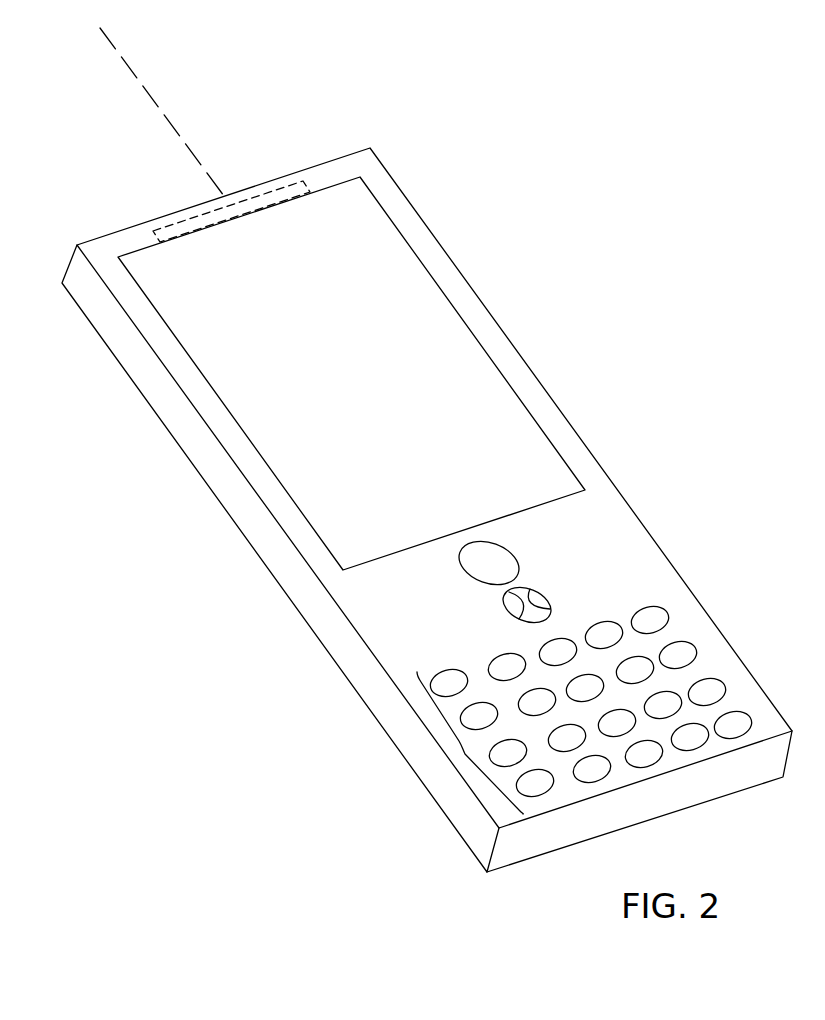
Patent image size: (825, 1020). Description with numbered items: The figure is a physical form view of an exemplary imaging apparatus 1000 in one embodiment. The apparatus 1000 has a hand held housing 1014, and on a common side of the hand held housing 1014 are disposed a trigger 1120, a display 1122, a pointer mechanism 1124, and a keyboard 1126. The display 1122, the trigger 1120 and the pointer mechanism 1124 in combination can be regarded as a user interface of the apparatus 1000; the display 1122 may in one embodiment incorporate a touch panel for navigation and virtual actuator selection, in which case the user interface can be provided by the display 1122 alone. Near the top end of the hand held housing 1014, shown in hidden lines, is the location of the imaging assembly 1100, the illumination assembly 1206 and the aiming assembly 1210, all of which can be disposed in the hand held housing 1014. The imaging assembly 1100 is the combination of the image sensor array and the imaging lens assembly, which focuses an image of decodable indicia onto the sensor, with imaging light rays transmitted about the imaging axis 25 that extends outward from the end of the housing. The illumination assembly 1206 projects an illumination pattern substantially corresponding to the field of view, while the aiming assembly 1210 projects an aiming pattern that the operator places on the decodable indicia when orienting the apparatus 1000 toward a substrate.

The apparatus 1000 is at (512, 154).
The imaging axis 25 is at (160, 108).
The imaging assembly 1100 is at (372, 142).
The illumination assembly 1206 is at (372, 142).
The aiming assembly 1210 is at (289, 180).
The display 1122 is at (513, 384).
The trigger 1120 is at (518, 558).
The pointer mechanism 1124 is at (551, 600).
The hand held housing 1014 is at (688, 630).
The keyboard 1126 is at (460, 753).